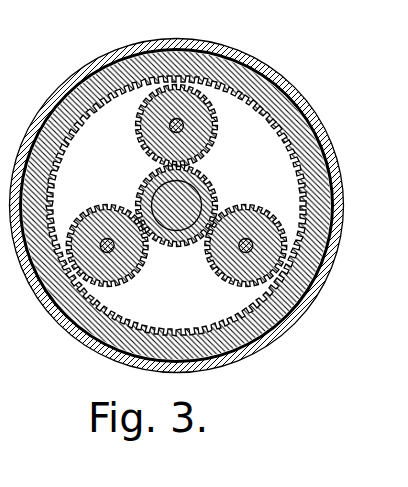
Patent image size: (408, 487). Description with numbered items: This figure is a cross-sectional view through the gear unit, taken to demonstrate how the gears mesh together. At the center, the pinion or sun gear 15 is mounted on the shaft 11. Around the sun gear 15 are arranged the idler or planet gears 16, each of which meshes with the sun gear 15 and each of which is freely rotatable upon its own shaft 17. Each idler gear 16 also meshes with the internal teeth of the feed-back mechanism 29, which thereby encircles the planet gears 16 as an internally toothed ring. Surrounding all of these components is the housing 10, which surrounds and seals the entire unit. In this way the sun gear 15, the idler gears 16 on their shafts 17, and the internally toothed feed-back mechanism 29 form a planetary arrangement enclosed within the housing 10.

The housing 10 is at (168, 37).
The feed-back mechanism 29 is at (261, 97).
The idler gear 16 is at (215, 124).
The sun gear 15 is at (213, 190).
The shaft 11 is at (167, 243).
The shaft 17 is at (107, 238).